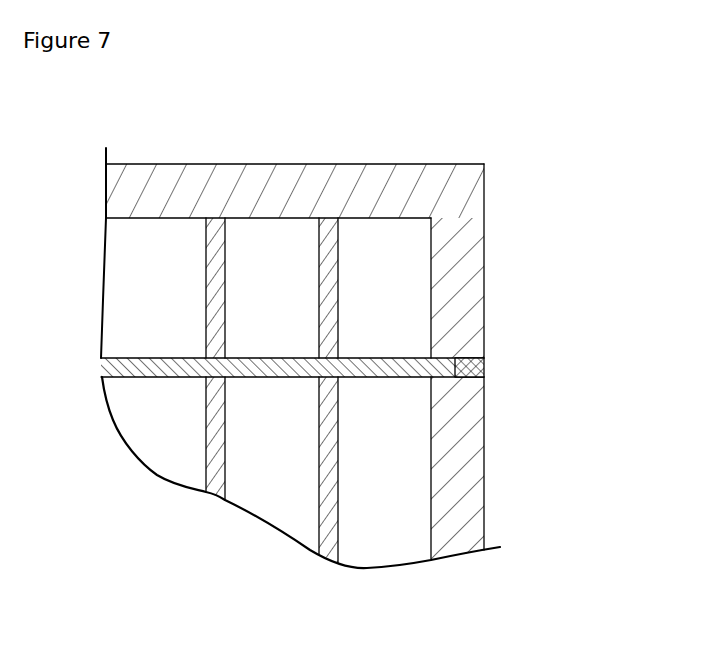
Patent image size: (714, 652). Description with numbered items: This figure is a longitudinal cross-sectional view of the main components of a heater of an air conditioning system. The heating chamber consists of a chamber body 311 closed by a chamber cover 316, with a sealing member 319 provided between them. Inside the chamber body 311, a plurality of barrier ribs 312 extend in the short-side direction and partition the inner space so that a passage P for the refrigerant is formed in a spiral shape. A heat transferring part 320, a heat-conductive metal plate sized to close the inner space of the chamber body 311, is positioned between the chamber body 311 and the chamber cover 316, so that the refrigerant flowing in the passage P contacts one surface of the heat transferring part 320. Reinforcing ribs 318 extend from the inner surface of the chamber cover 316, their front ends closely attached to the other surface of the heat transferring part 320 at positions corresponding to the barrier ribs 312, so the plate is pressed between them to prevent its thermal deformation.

The chamber body 311 is at (484, 458).
The barrier rib 312 is at (400, 416).
The chamber cover 316 is at (484, 252).
The reinforcing rib 318 is at (340, 276).
The sealing member 319 is at (484, 364).
The heat transferring part 320 is at (158, 365).
The passage P is at (279, 465).